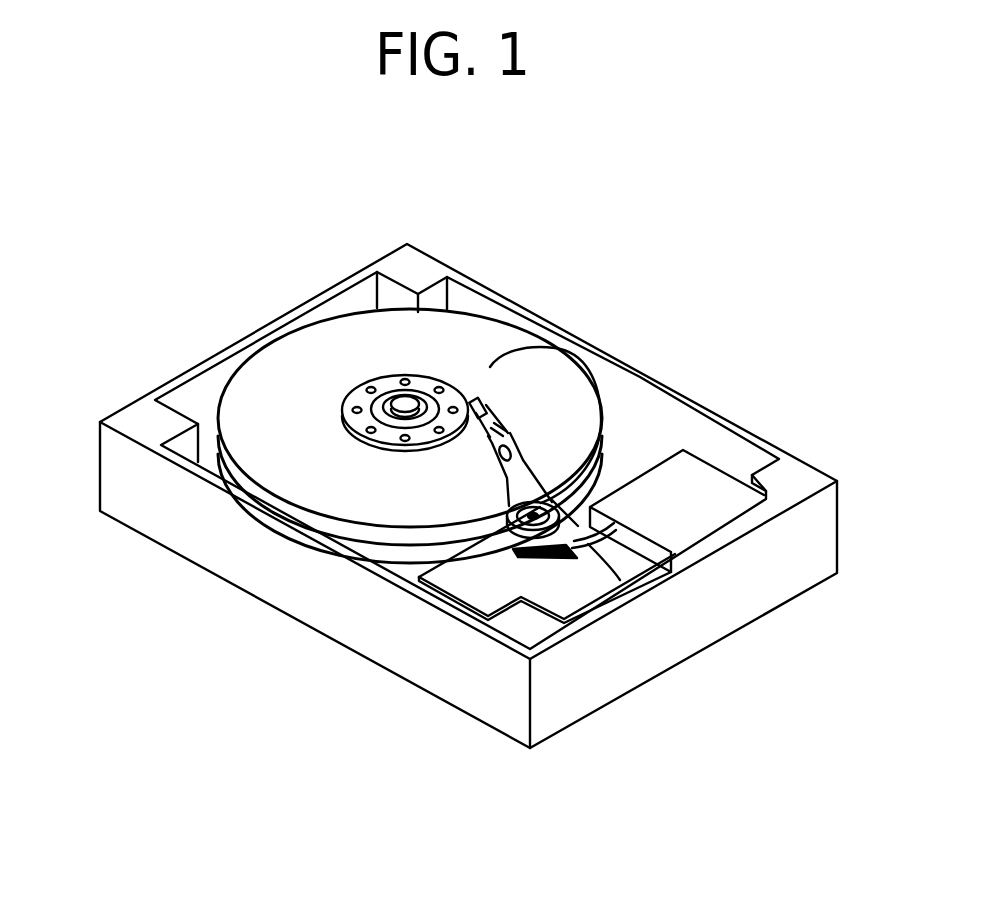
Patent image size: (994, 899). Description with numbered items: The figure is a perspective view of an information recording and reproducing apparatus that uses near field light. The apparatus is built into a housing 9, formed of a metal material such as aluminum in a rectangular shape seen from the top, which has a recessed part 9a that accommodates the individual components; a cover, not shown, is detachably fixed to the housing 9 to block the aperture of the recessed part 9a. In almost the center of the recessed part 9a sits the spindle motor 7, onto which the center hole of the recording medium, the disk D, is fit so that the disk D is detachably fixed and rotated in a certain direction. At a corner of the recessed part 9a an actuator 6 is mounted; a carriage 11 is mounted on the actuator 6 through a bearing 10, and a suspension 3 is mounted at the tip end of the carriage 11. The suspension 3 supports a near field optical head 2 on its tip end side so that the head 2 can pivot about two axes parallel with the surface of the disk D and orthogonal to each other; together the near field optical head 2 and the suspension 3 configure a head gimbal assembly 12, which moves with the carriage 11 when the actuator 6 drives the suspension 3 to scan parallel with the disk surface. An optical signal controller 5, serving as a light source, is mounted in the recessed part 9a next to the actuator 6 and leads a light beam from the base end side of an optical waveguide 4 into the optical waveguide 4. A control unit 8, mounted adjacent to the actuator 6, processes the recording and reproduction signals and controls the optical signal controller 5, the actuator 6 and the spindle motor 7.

The near field optical head 2 is at (481, 398).
The suspension 3 is at (490, 425).
The optical waveguide 4 is at (577, 551).
The optical signal controller 5 is at (680, 517).
The actuator 6 is at (556, 571).
The spindle motor 7 is at (404, 405).
The control unit 8 is at (737, 502).
The housing 9 is at (237, 347).
The recessed part 9a is at (207, 397).
The bearing 10 is at (605, 457).
The carriage 11 is at (538, 507).
The head gimbal assembly 12 is at (703, 256).
The disk D is at (400, 560).